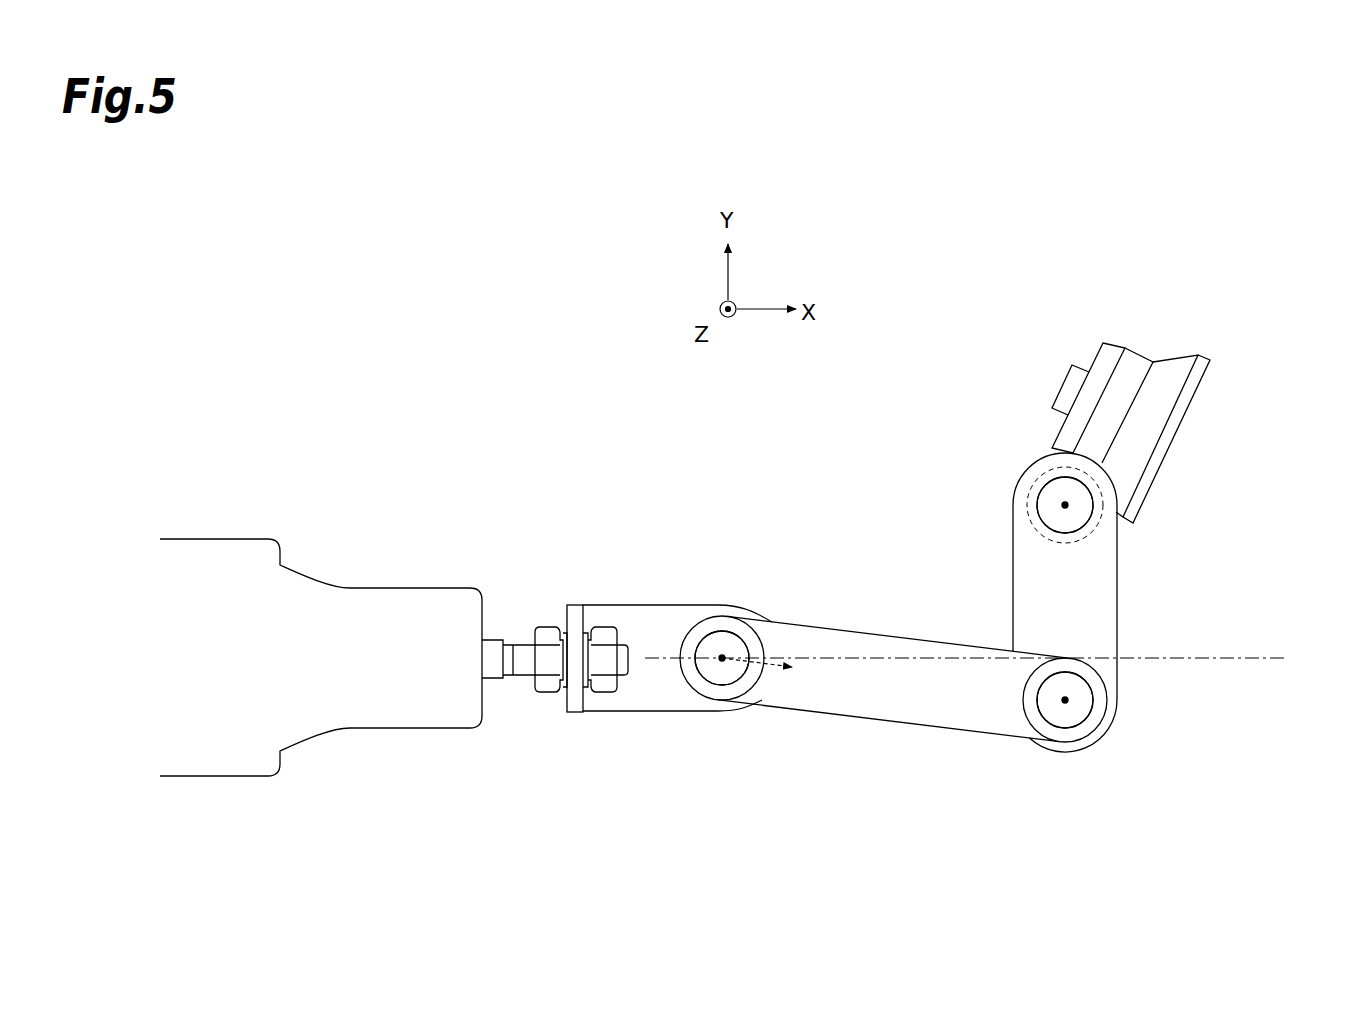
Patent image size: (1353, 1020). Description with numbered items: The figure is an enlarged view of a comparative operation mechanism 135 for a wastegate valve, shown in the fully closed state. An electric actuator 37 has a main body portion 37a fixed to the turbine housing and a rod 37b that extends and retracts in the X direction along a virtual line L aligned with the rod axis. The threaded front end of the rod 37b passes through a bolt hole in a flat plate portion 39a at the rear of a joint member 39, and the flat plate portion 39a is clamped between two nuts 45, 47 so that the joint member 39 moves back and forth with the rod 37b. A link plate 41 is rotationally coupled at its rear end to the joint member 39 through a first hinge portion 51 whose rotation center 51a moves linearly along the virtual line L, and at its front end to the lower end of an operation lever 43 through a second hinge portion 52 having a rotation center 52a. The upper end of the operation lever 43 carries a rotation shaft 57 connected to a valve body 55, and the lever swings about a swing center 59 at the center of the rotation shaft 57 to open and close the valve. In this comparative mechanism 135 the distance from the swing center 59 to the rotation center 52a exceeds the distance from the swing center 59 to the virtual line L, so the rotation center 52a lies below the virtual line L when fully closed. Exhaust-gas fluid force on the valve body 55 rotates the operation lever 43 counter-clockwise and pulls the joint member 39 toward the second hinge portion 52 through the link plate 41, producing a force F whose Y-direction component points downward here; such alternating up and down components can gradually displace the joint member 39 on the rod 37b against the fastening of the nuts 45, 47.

The comparative operation mechanism 135 is at (537, 298).
The electric actuator 37 is at (348, 709).
The main body portion 37a is at (393, 713).
The rod 37b is at (493, 663).
The joint member 39 is at (665, 602).
The flat plate portion 39a is at (575, 713).
The link plate 41 is at (885, 645).
The operation lever 43 is at (1045, 585).
The nut 45 is at (543, 628).
The nut 47 is at (603, 628).
The first hinge portion 51 is at (723, 675).
The rotation center 51a is at (724, 652).
The second hinge portion 52 is at (1070, 717).
The rotation center 52a is at (1062, 701).
The valve body 55 is at (1148, 402).
The rotation shaft 57 is at (1055, 495).
The swing center 59 is at (1070, 507).
The force F is at (765, 663).
The virtual line L is at (1178, 660).